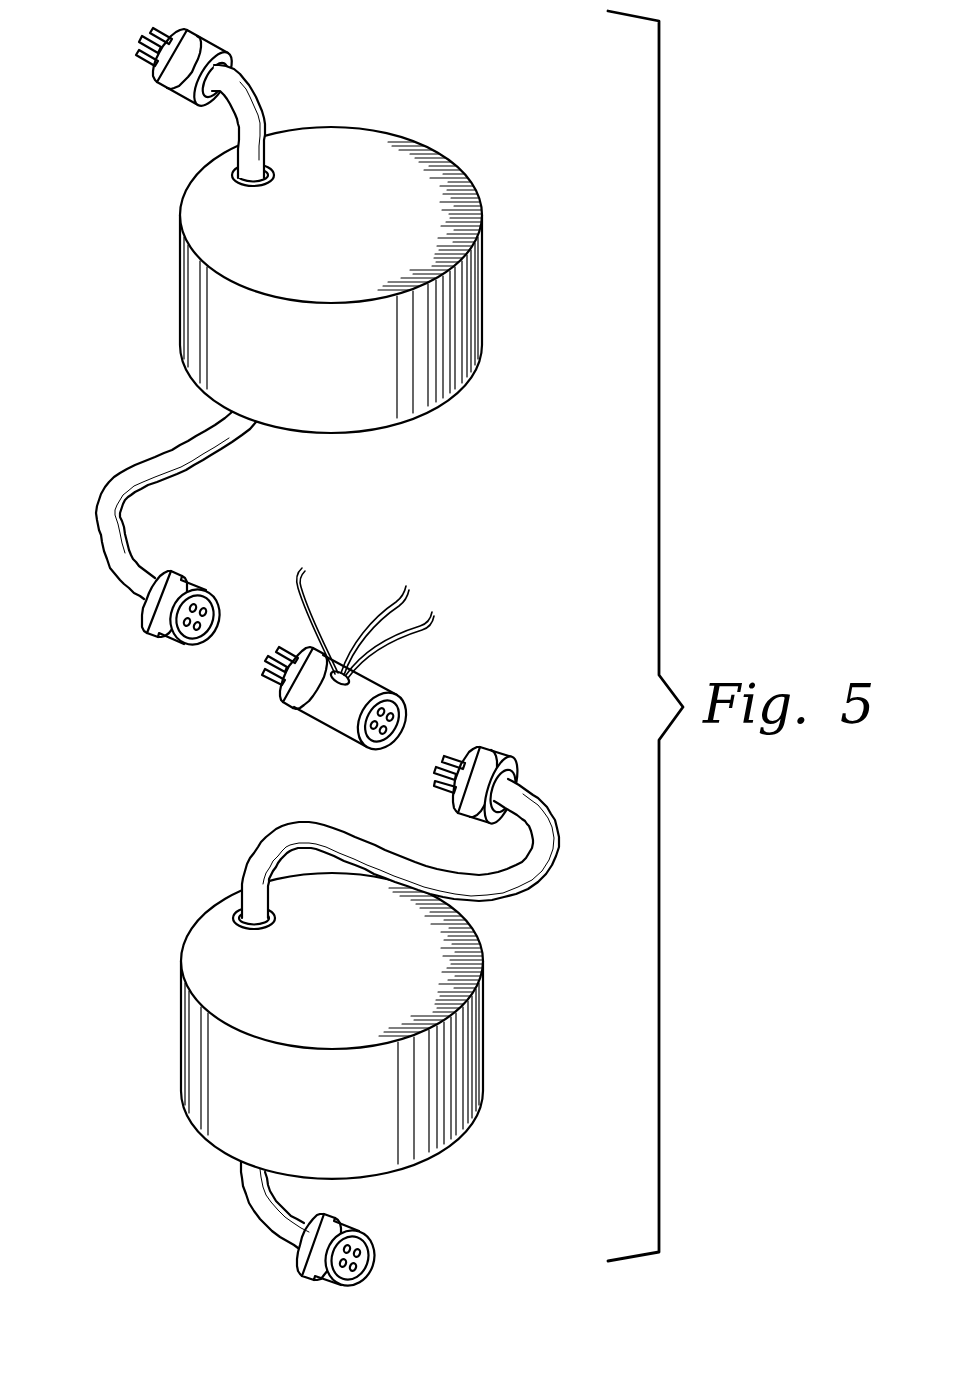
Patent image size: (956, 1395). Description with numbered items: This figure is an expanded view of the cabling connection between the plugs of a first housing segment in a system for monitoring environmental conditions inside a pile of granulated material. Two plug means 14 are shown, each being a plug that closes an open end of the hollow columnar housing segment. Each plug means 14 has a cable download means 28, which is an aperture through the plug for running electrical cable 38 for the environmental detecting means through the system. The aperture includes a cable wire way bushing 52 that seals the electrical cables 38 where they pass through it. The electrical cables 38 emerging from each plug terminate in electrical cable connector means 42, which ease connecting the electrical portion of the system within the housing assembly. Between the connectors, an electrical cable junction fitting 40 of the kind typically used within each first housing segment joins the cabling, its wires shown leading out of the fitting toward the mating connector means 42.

The plug means 14 is at (322, 245).
The cable download means 28 is at (280, 172).
The electrical cable 38 is at (251, 91).
The electrical cable junction fitting 40 is at (317, 716).
The electrical cable connector means 42 is at (185, 92).
The cable wire way bushing 52 is at (243, 177).